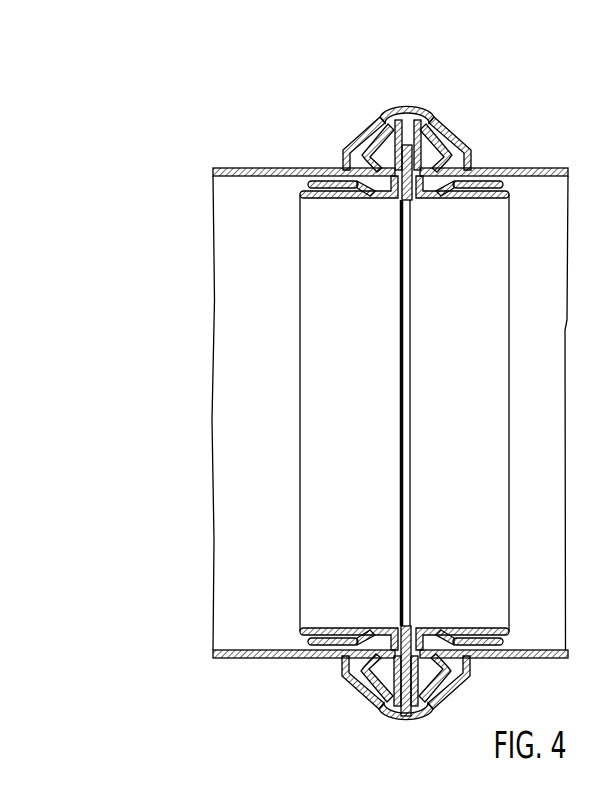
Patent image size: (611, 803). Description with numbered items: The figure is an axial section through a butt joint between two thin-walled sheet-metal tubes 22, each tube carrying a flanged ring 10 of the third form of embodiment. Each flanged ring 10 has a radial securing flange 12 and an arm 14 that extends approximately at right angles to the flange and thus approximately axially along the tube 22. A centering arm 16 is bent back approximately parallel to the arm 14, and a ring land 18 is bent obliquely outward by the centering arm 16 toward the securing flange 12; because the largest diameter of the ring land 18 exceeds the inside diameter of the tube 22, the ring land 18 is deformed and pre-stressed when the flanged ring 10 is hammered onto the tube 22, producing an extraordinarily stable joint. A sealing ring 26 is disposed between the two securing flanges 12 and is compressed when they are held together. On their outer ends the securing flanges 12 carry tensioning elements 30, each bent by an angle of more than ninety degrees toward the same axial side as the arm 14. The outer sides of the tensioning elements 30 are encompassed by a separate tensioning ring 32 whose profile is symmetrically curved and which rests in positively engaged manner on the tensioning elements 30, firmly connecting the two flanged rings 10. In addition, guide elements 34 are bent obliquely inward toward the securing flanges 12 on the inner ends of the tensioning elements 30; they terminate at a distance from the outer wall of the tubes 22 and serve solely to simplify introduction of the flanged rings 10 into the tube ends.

The flanged ring 10 is at (297, 340).
The securing flange 12 is at (385, 132).
The arm 14 is at (350, 200).
The centering arm 16 is at (307, 167).
The ring land 18 is at (343, 163).
The tube 22 is at (233, 168).
The sealing ring 26 is at (399, 201).
The tensioning element 30 is at (360, 133).
The tensioning ring 32 is at (405, 104).
The guide element 34 is at (363, 137).